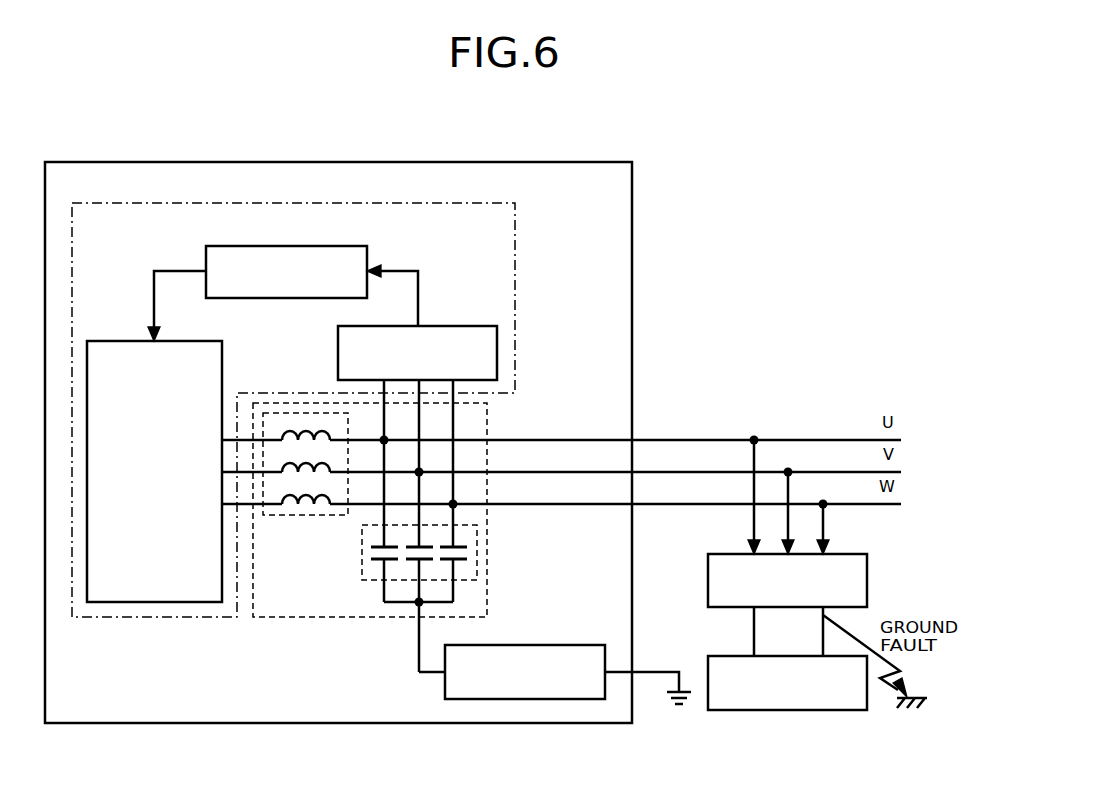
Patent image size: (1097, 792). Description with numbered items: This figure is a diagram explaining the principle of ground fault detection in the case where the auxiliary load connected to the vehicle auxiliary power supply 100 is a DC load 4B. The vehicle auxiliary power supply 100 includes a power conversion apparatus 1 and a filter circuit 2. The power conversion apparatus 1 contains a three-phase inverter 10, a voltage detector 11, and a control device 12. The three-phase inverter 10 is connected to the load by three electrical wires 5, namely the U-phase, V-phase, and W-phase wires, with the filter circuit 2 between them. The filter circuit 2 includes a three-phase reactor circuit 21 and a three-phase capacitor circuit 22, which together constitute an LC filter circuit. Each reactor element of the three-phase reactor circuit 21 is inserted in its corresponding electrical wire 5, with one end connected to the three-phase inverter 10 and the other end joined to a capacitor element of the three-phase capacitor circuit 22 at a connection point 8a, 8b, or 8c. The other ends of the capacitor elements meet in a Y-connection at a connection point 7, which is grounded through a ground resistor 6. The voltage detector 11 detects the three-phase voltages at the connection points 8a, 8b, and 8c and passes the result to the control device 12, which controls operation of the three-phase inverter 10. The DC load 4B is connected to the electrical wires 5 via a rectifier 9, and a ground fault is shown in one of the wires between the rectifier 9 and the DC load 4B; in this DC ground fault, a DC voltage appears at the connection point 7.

The vehicle auxiliary power supply 100 is at (560, 162).
The power conversion apparatus 1 is at (475, 203).
The control device 12 is at (325, 246).
The voltage detector 11 is at (460, 326).
The three-phase inverter 10 is at (180, 341).
The filter circuit 2 is at (370, 524).
The three-phase reactor circuit 21 is at (305, 515).
The three-phase capacitor circuit 22 is at (362, 551).
The connection point 7 is at (416, 603).
The connection point 8a is at (388, 440).
The connection point 8b is at (423, 472).
The connection point 8c is at (457, 504).
The electrical wires 5 is at (552, 510).
The ground resistor 6 is at (560, 645).
The rectifier 9 is at (867, 580).
The DC load 4B is at (826, 710).